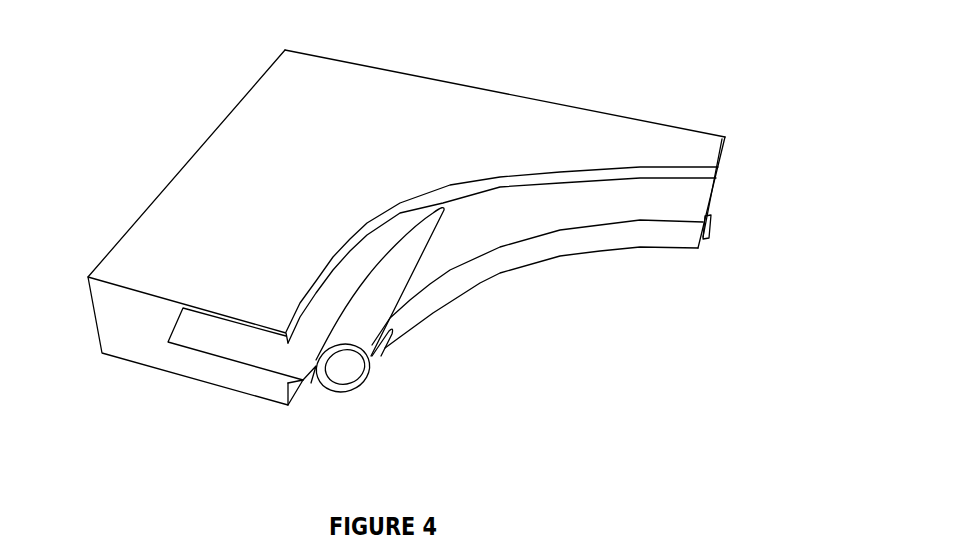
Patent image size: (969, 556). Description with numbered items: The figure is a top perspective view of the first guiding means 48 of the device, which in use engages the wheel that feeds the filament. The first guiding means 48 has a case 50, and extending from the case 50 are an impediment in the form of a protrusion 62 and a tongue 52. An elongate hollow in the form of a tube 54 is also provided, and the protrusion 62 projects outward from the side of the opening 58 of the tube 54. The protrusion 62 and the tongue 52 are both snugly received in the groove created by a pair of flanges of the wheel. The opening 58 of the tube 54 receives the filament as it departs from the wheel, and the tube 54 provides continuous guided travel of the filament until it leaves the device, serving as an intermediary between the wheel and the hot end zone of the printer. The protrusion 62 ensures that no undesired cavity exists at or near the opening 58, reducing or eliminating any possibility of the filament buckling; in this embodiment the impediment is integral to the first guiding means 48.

The first guiding means 48 is at (604, 85).
The case 50 is at (177, 210).
The tongue 52 is at (583, 207).
The tube 54 is at (370, 295).
The opening 58 is at (343, 369).
The protrusion 62 is at (223, 342).